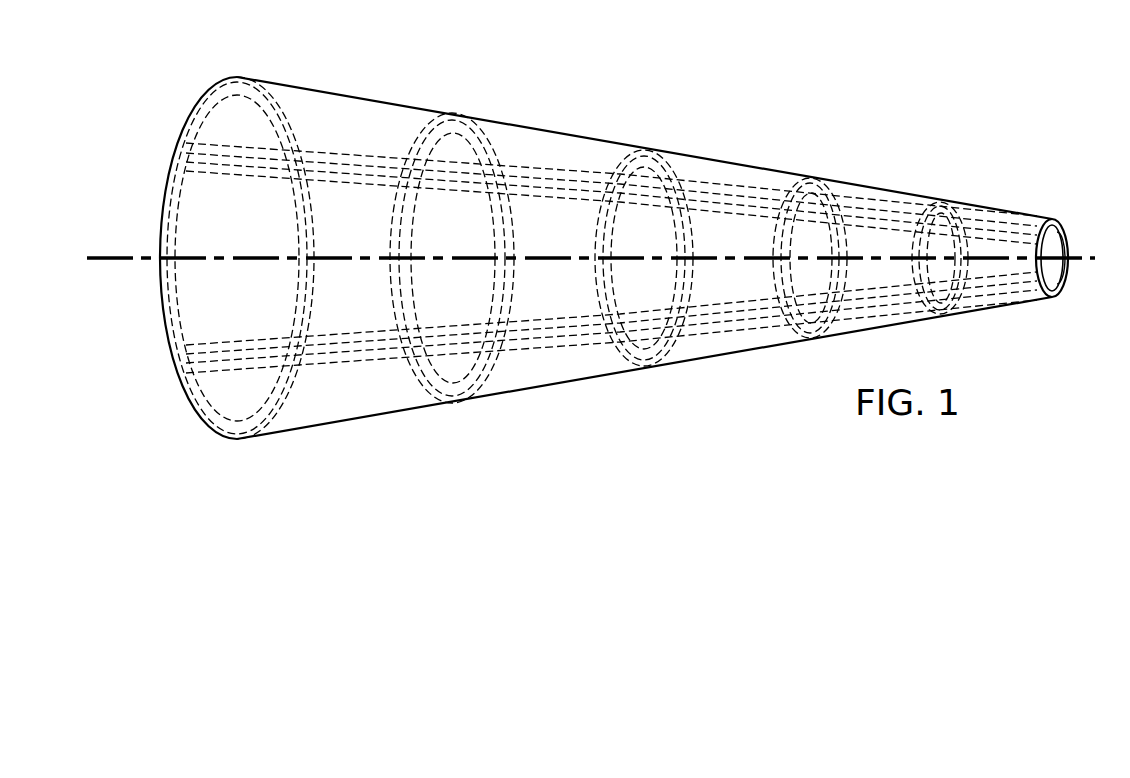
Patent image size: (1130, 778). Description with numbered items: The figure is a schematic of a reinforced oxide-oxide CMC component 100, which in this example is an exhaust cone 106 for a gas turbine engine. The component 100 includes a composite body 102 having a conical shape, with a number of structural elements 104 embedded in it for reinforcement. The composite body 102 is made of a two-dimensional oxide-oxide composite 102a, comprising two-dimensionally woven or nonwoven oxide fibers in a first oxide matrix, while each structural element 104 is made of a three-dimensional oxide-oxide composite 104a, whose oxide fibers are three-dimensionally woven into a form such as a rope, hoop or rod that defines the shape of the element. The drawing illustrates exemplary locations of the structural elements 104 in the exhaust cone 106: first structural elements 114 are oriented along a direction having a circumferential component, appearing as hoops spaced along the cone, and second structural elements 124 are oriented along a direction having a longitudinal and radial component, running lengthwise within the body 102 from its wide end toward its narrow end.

The reinforced oxide-oxide CMC component 100 is at (591, 244).
The exhaust cone 106 is at (591, 244).
The composite body 102 is at (614, 280).
The 2D oxide-oxide composite 102a is at (915, 167).
The structural element 104 is at (602, 244).
The 3D oxide-oxide composite 104a is at (602, 244).
The first structural element 114 is at (440, 73).
The second structural element 124 is at (553, 172).